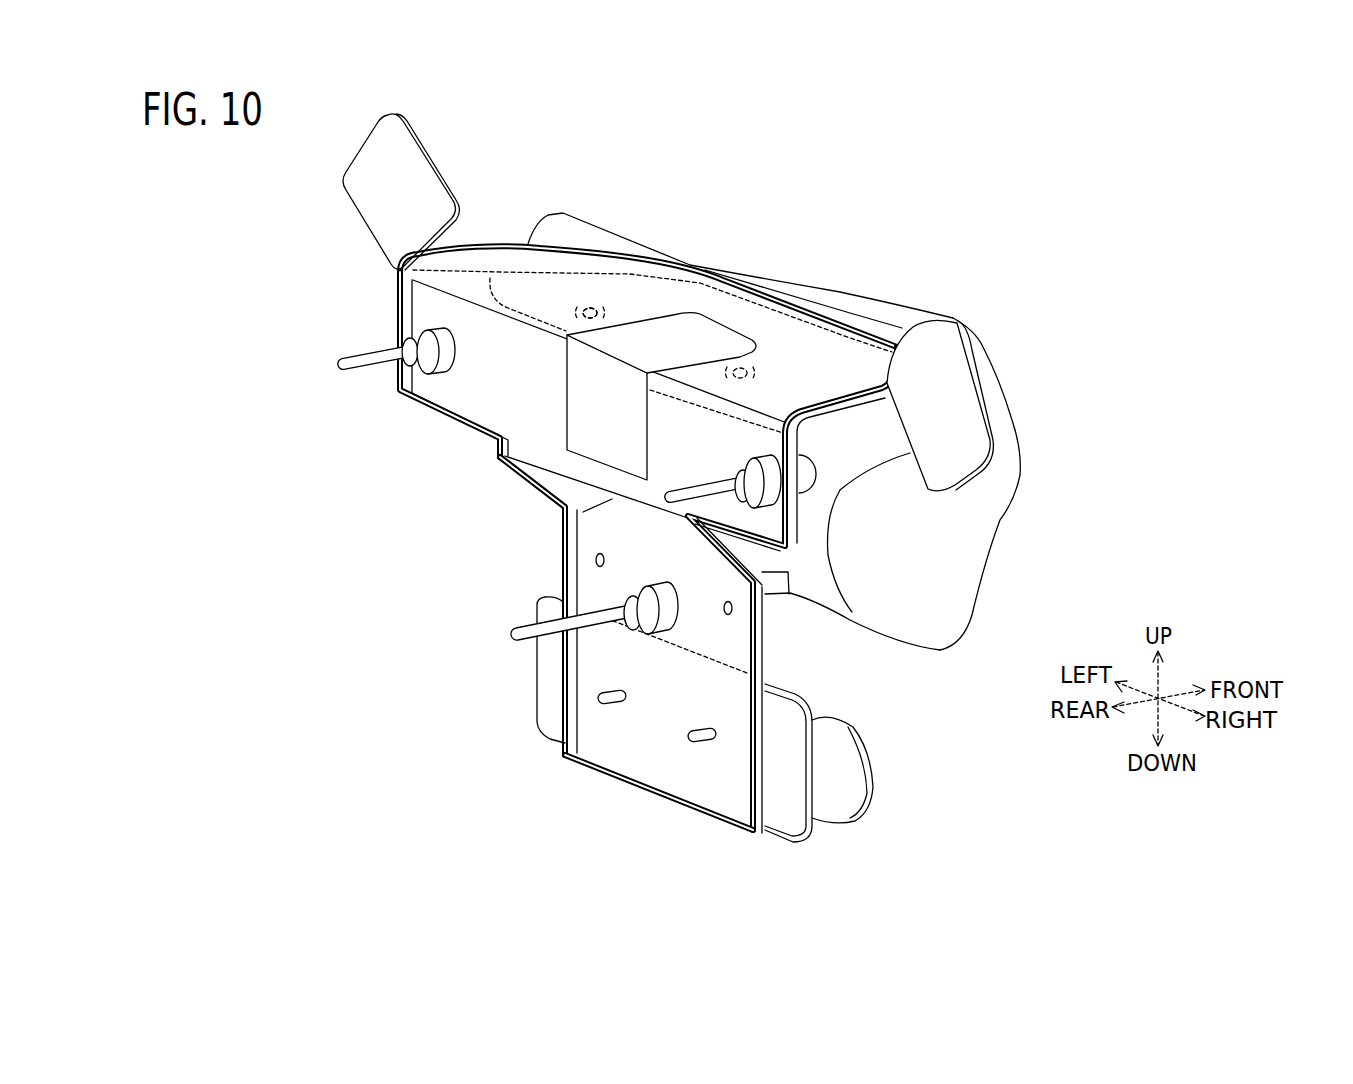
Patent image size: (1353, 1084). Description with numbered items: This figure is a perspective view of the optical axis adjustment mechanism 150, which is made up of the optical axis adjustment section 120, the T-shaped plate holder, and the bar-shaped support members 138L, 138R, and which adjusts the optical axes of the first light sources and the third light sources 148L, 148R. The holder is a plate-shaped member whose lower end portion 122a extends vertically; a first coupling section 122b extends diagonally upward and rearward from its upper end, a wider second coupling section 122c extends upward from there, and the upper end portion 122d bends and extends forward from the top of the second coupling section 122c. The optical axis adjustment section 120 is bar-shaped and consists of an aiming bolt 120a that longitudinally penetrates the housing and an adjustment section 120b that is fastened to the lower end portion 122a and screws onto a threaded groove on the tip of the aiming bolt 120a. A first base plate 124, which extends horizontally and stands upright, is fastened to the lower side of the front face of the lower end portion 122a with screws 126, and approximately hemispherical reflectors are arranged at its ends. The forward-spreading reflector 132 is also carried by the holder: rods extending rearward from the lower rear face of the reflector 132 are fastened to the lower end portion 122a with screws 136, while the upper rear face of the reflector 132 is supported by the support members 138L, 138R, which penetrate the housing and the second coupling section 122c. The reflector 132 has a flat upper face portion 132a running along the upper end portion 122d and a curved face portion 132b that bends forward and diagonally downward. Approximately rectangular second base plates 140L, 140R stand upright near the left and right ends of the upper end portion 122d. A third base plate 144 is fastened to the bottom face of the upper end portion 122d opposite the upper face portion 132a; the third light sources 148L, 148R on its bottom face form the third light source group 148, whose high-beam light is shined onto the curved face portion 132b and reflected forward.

The optical axis adjustment section 120 is at (541, 662).
The aiming bolt 120a is at (515, 642).
The adjustment section 120b is at (565, 697).
The lower end portion 122a is at (654, 755).
The first coupling section 122b is at (560, 521).
The second coupling section 122c is at (422, 308).
The upper end portion 122d is at (477, 270).
The first base plate 124 is at (790, 826).
The screws 126 is at (703, 728).
The reflector 132 is at (990, 344).
The upper face portion 132a is at (838, 300).
The curved face portion 132b is at (592, 420).
The screws 136 is at (727, 604).
The support member 138L is at (367, 372).
The support member 138R is at (697, 490).
The second base plate 140L is at (400, 158).
The second base plate 140R is at (930, 333).
The third base plate 144 is at (687, 337).
The third light source group 148 is at (608, 310).
The third light source 148L is at (583, 300).
The third light source 148R is at (753, 373).
The optical axis adjustment mechanism 150 is at (488, 573).